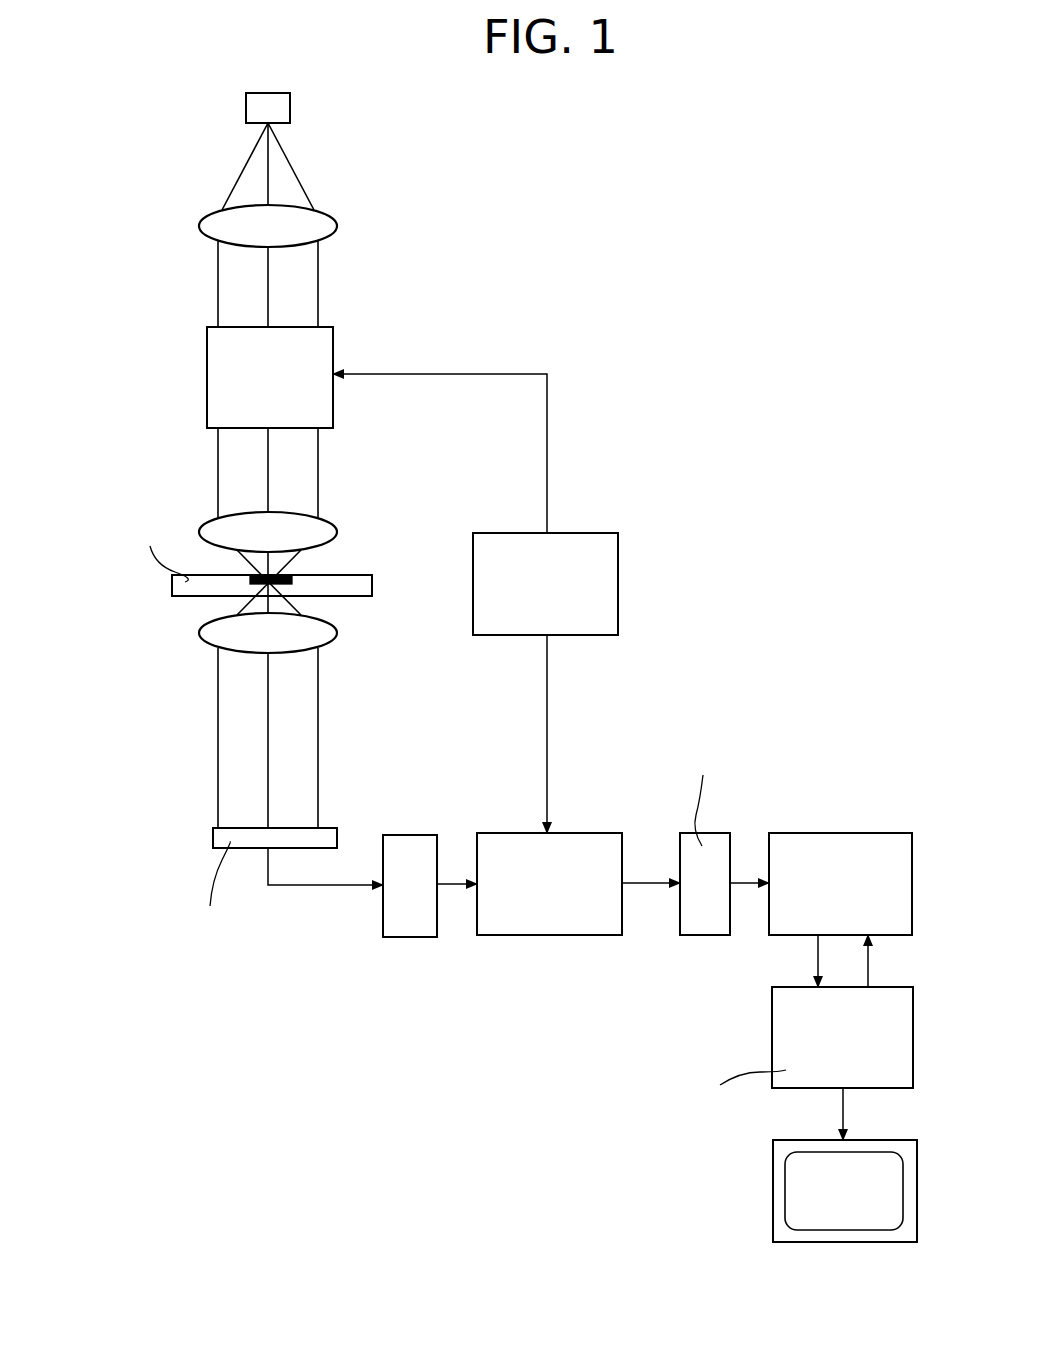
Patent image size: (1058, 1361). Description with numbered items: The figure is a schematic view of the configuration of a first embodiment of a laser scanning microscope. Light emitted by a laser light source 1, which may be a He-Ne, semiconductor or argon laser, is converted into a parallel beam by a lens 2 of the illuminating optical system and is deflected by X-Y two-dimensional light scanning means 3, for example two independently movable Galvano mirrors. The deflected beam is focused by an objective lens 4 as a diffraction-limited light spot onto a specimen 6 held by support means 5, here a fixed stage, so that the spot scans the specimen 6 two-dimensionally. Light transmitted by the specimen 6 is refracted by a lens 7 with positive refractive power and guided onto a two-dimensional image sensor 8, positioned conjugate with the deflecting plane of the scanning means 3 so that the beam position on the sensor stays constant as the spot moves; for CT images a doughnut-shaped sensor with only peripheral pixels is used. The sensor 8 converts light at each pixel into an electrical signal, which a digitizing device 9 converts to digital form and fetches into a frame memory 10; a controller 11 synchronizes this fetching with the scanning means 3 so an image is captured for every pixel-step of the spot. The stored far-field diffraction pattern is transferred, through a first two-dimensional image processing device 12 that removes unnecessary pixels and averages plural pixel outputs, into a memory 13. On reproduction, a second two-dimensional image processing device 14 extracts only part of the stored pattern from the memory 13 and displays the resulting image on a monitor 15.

The laser light source 1 is at (290, 108).
The lens 2 is at (337, 226).
The X-Y two-dimensional light scanning means 3 is at (333, 333).
The objective lens 4 is at (337, 532).
The support means 5 is at (372, 585).
The specimen 6 is at (300, 578).
The lens with positive refractive power 7 is at (337, 633).
The two-dimensional image sensor 8 is at (245, 848).
The digitizing device 9 is at (410, 937).
The frame memory 10 is at (550, 935).
The controller 11 is at (587, 635).
The first two-dimensional image processing device 12 is at (705, 935).
The memory 13 is at (841, 833).
The second two-dimensional image processing device 14 is at (772, 1037).
The monitor 15 is at (773, 1191).